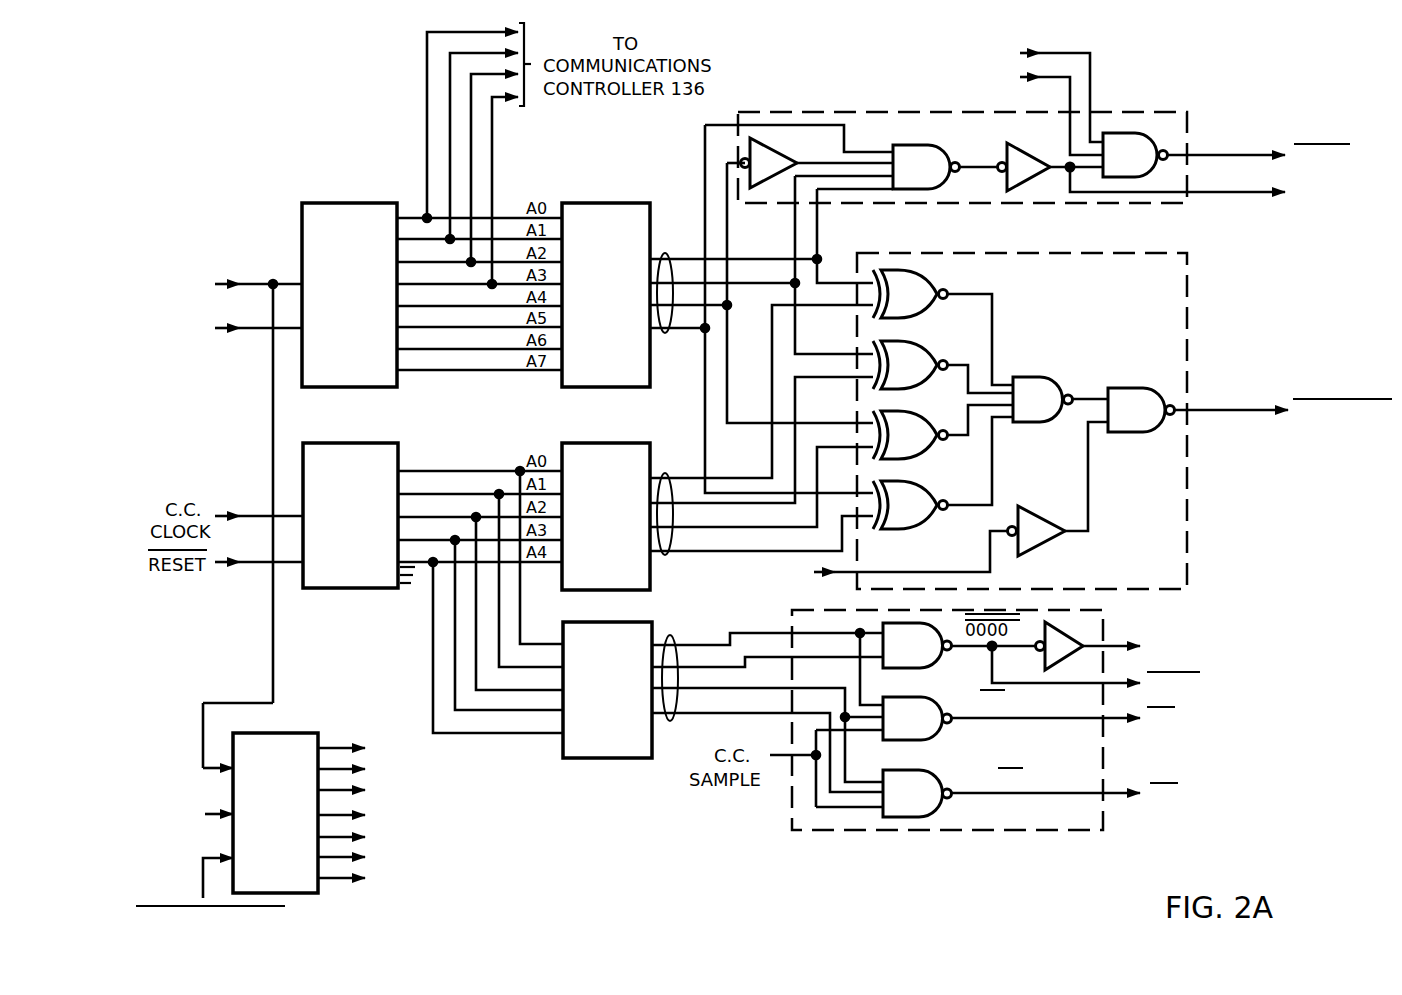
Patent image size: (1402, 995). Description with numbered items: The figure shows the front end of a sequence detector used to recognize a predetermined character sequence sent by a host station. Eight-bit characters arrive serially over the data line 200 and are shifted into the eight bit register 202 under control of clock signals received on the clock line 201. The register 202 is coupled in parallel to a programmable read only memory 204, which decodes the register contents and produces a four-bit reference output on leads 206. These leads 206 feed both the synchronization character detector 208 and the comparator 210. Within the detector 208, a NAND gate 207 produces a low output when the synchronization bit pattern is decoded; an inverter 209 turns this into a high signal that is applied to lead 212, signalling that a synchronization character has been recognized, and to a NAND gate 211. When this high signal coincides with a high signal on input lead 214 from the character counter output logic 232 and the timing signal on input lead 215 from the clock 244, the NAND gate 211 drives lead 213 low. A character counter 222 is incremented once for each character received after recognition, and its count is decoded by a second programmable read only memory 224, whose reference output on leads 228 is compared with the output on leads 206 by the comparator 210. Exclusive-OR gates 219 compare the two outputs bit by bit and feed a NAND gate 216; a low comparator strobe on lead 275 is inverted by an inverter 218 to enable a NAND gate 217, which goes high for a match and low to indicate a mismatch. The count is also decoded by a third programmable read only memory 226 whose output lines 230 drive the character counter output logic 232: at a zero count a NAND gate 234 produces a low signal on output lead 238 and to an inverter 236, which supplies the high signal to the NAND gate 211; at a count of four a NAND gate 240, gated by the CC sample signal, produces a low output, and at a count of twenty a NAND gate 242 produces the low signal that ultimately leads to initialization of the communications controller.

The data line 200 is at (288, 330).
The clock line 201 is at (288, 284).
The eight bit register 202 is at (356, 203).
The programmable read only memory 204 is at (613, 203).
The output leads 206 is at (665, 254).
The NAND gate 207 is at (922, 145).
The synchronization character detector 208 is at (738, 112).
The inverter 209 is at (1026, 186).
The comparator 210 is at (938, 253).
The NAND gate 211 is at (1123, 133).
The lead 212 is at (1230, 192).
The lead 213 is at (1215, 155).
The input lead 214 is at (1070, 53).
The input lead 215 is at (1062, 77).
The NAND gate 216 is at (1030, 377).
The NAND gate 217 is at (1118, 388).
The inverter 218 is at (1040, 551).
The EXCLUSIVE-OR gates 219 is at (930, 317).
The character counter 222 is at (373, 443).
The programmable read only memory 224 is at (607, 443).
The programmable read only memory 226 is at (603, 622).
The output leads 228 is at (665, 474).
The PROM output lines QA-QD 230 is at (670, 636).
The character counter output logic 232 is at (848, 830).
The NAND gate 234 is at (920, 668).
The inverter 236 is at (1075, 637).
The output lead 238 is at (1025, 683).
The NAND gate 240 is at (920, 740).
The NAND gate 242 is at (935, 810).
The clock 244 is at (318, 893).
The lead 275 is at (890, 572).